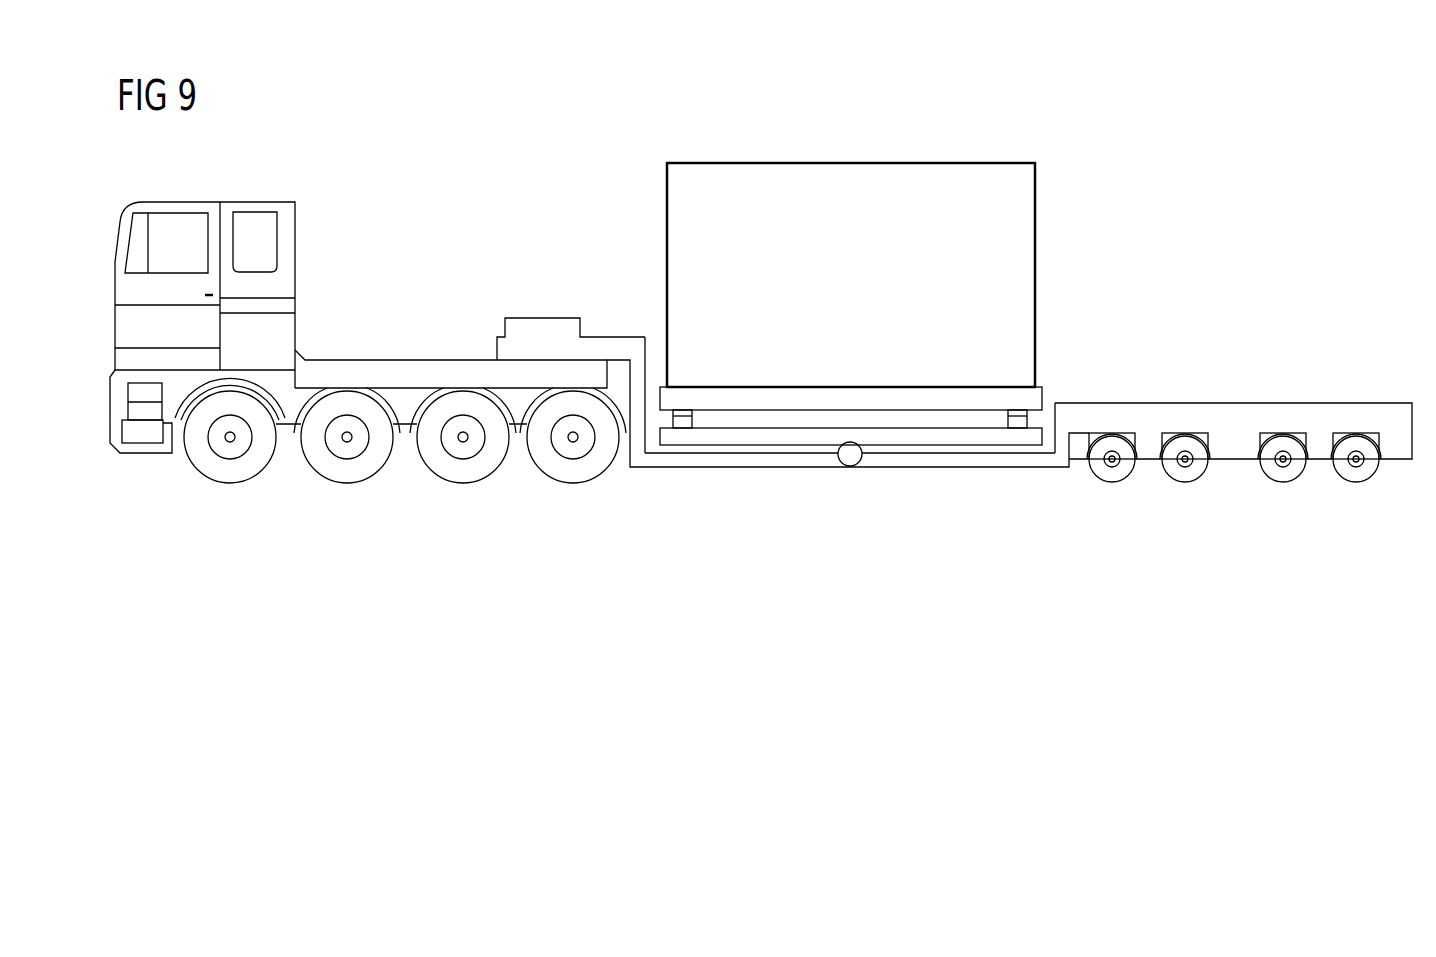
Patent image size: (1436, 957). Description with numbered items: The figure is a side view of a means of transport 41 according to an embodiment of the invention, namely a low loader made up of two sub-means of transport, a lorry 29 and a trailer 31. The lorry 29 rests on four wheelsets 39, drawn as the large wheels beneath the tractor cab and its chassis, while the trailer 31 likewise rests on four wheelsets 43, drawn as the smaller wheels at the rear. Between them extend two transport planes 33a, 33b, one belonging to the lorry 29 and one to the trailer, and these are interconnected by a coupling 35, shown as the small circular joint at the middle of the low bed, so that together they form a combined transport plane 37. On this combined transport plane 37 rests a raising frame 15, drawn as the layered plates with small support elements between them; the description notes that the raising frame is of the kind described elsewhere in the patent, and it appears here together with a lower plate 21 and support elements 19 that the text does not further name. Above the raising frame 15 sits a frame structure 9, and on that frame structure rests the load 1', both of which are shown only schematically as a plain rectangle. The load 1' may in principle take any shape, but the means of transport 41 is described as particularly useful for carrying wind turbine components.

The load 1' is at (874, 275).
The frame structure 9 is at (1035, 398).
The raising frame 15 is at (941, 408).
The support element 19 is at (693, 420).
The lower carrier plate 21 is at (717, 437).
The lorry 29 is at (340, 244).
The trailer 31 is at (1248, 314).
The transport plane 33a is at (750, 453).
The transport plane 33b is at (943, 455).
The coupling 35 is at (850, 466).
The combined transport plane 37 is at (806, 523).
The wheelsets 39 is at (233, 478).
The means of transport 41 is at (595, 134).
The wheelsets 43 is at (1110, 476).